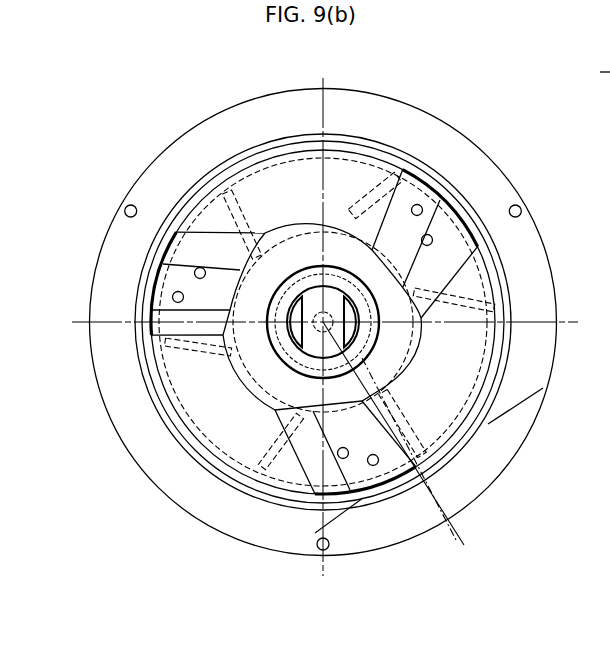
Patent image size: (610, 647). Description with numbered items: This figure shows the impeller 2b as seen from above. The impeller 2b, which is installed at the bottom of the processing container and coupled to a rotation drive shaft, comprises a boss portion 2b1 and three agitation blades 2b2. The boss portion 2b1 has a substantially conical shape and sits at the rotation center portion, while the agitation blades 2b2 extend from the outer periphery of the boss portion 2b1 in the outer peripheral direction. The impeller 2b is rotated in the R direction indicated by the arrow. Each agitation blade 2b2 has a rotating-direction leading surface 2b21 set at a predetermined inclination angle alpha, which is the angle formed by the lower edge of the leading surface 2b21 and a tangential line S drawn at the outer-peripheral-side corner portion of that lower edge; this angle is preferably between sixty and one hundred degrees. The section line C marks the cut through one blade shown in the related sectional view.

The impeller 2b is at (254, 180).
The boss portion 2b1 is at (257, 368).
The agitation blade 2b2 is at (441, 210).
The rotating-direction leading surface 2b21 is at (372, 197).
The R direction R is at (340, 183).
The section line C- C is at (367, 172).
The tangential line S is at (508, 416).